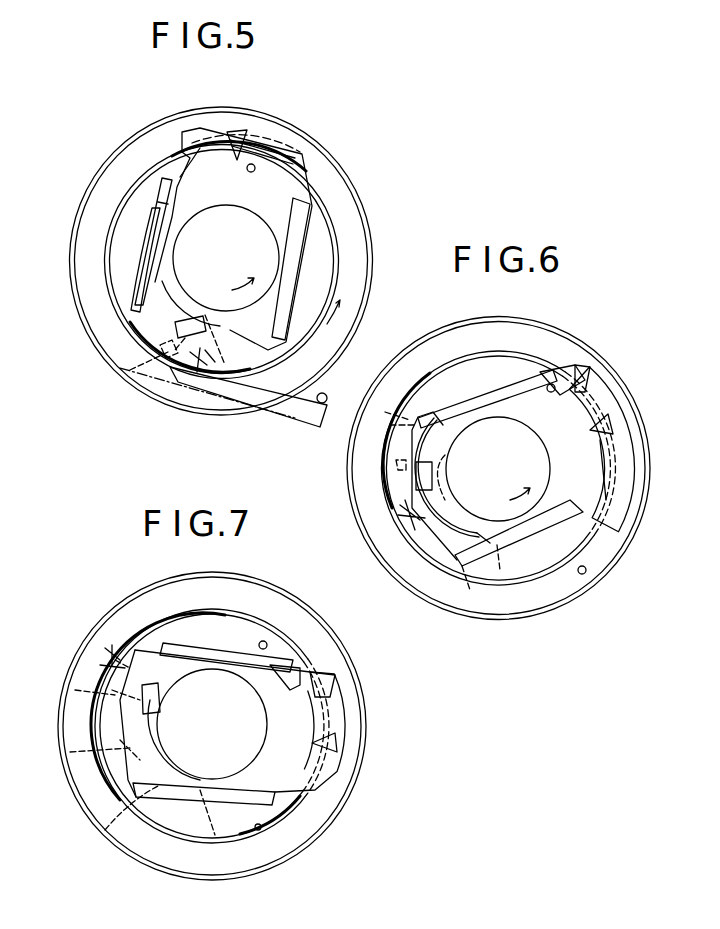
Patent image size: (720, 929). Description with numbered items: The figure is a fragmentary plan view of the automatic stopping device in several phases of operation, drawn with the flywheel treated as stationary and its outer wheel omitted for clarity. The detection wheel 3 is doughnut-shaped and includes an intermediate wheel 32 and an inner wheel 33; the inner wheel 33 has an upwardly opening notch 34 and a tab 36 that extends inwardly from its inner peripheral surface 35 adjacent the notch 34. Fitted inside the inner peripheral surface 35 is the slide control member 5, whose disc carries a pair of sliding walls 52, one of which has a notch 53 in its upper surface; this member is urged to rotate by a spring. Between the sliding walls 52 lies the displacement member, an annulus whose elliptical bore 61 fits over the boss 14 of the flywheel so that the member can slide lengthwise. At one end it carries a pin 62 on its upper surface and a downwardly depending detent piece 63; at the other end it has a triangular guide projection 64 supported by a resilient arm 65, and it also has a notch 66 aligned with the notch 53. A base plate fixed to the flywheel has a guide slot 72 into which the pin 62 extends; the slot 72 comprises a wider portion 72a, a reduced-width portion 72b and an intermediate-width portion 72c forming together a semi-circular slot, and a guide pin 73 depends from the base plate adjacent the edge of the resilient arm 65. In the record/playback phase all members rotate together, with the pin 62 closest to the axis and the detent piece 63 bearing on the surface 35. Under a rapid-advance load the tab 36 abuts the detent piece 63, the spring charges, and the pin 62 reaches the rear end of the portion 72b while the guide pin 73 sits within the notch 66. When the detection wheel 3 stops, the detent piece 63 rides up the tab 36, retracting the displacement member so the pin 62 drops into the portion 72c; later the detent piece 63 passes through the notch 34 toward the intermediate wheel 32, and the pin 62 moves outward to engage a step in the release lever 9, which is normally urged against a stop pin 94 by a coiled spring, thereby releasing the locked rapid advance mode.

In FIG. 5, the detection wheel 3 is at (352, 160).
In FIG. 6, the detection wheel 3 is at (629, 364).
In FIG. 7, the detection wheel 3 is at (375, 676).
In FIG. 5, the slide control member 5 is at (296, 252).
In FIG. 6, the slide control member 5 is at (523, 463).
In FIG. 7, the slide control member 5 is at (232, 723).
In FIG. 5, the release lever 9 is at (290, 415).
In FIG. 5, the boss 14 is at (208, 232).
In FIG. 6, the boss 14 is at (545, 462).
In FIG. 7, the boss 14 is at (260, 745).
In FIG. 5, the intermediate wheel 32 is at (355, 192).
In FIG. 6, the intermediate wheel 32 is at (562, 330).
In FIG. 7, the intermediate wheel 32 is at (214, 878).
In FIG. 5, the inner wheel 33 is at (338, 255).
In FIG. 6, the inner wheel 33 is at (462, 360).
In FIG. 7, the inner wheel 33 is at (300, 822).
In FIG. 5, the notch 34 is at (320, 400).
In FIG. 6, the notch 34 is at (388, 440).
In FIG. 7, the notch 34 is at (160, 612).
In FIG. 6, the inner peripheral surface 35 is at (586, 575).
In FIG. 7, the inner peripheral surface 35 is at (262, 832).
In FIG. 5, the tab 36 is at (200, 370).
In FIG. 6, the tab 36 is at (400, 512).
In FIG. 7, the tab 36 is at (105, 658).
In FIG. 5, the sliding walls 52 is at (145, 250).
In FIG. 6, the sliding walls 52 is at (470, 400).
In FIG. 7, the sliding walls 52 is at (200, 660).
In FIG. 5, the notch 53 is at (160, 195).
In FIG. 6, the notch 53 is at (530, 380).
In FIG. 7, the notch 53 is at (290, 665).
In FIG. 5, the elliptical bore 61 is at (262, 300).
In FIG. 6, the elliptical bore 61 is at (575, 505).
In FIG. 7, the elliptical bore 61 is at (204, 794).
In FIG. 5, the pin 62 is at (197, 320).
In FIG. 6, the pin 62 is at (440, 480).
In FIG. 7, the pin 62 is at (160, 700).
In FIG. 5, the detent piece 63 is at (130, 370).
In FIG. 6, the detent piece 63 is at (395, 470).
In FIG. 7, the detent piece 63 is at (75, 690).
In FIG. 5, the triangular guide projection 64 is at (240, 140).
In FIG. 6, the triangular guide projection 64 is at (620, 408).
In FIG. 7, the triangular guide projection 64 is at (338, 745).
In FIG. 5, the resilient arm 65 is at (270, 150).
In FIG. 6, the resilient arm 65 is at (618, 455).
In FIG. 6, the notch 66 is at (578, 372).
In FIG. 7, the notch 66 is at (305, 690).
In FIG. 5, the guide slot 72 is at (220, 350).
In FIG. 6, the guide slot 72 is at (495, 570).
In FIG. 7, the guide slot 72 is at (220, 810).
In FIG. 7, the wider slot portion 72a is at (125, 825).
In FIG. 7, the reduced-width slot portion 72b is at (70, 752).
In FIG. 6, the intermediate-width slot portion 72c is at (448, 452).
In FIG. 5, the guide pin 73 is at (254, 174).
In FIG. 6, the guide pin 73 is at (553, 394).
In FIG. 7, the guide pin 73 is at (266, 640).
In FIG. 5, the stop pin 94 is at (328, 395).